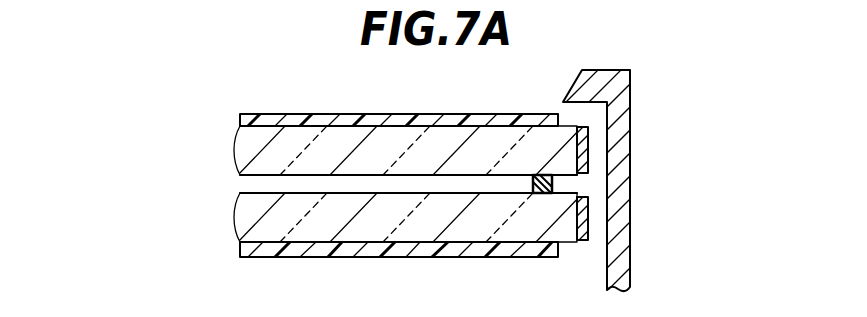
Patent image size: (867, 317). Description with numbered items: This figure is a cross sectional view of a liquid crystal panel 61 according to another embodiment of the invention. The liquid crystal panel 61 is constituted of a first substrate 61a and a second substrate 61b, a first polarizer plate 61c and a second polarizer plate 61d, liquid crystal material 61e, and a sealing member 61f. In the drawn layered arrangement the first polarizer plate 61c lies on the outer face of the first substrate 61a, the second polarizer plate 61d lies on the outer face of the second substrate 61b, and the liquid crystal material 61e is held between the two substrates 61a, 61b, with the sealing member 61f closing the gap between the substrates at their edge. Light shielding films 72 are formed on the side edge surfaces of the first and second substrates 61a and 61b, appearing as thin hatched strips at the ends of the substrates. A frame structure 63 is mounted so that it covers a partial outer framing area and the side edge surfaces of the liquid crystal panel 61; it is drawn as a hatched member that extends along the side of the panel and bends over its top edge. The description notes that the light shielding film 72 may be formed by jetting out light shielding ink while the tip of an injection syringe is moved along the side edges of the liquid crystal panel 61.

The liquid crystal panel 61 is at (140, 94).
The first substrate 61a is at (235, 153).
The second substrate 61b is at (240, 222).
The first polarizer plate 61c is at (237, 122).
The second polarizer plate 61d is at (238, 250).
The liquid crystal material 61e is at (240, 185).
The sealing member 61f is at (552, 182).
The frame structure 63 is at (632, 77).
The light shielding film 72 is at (590, 137).